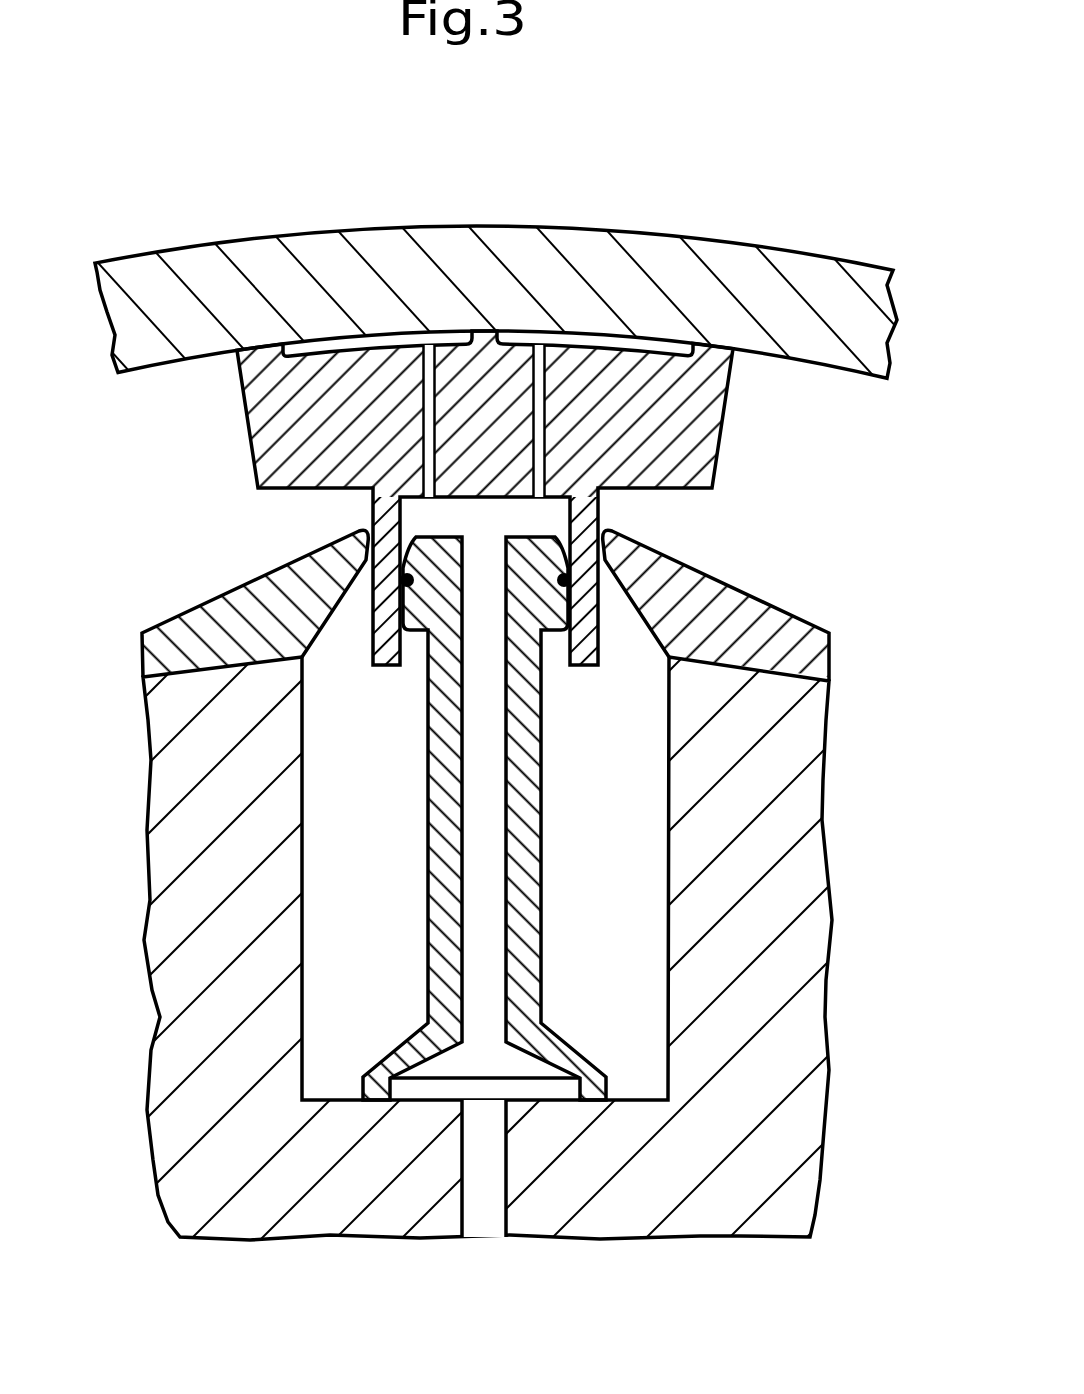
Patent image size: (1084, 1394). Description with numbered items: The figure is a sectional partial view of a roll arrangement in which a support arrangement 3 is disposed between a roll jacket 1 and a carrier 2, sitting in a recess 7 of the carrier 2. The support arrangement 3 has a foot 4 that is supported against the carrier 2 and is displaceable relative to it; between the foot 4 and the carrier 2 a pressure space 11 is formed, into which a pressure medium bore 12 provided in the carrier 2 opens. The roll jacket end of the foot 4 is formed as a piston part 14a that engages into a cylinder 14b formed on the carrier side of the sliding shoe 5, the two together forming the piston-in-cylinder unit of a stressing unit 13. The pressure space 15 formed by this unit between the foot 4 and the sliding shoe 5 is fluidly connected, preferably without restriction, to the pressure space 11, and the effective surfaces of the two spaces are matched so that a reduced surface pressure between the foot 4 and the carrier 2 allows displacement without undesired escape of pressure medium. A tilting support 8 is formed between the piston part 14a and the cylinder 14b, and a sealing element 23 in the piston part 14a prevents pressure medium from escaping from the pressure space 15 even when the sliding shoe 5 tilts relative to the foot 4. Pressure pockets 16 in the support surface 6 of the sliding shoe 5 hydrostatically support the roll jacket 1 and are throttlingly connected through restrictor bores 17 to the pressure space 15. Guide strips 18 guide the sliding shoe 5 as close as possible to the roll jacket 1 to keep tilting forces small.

The roll jacket 1 is at (826, 281).
The carrier 2 is at (237, 1213).
The support arrangement 3 is at (297, 516).
The foot 4 is at (547, 860).
The sliding shoe 5 is at (710, 412).
The support surface 6 is at (477, 331).
The recess 7 is at (640, 943).
The tilting support 8 is at (610, 595).
The pressure space 11 is at (522, 1090).
The pressure medium bore 12 is at (487, 1217).
The stressing unit 13 is at (555, 690).
The piston part 14a is at (592, 633).
The cylinder 14b is at (387, 623).
The pressure space 15 is at (545, 520).
The pressure pockets 16 is at (370, 345).
The restrictor bores 17 is at (427, 406).
The guide strips 18 is at (310, 580).
The sealing element 23 is at (412, 578).